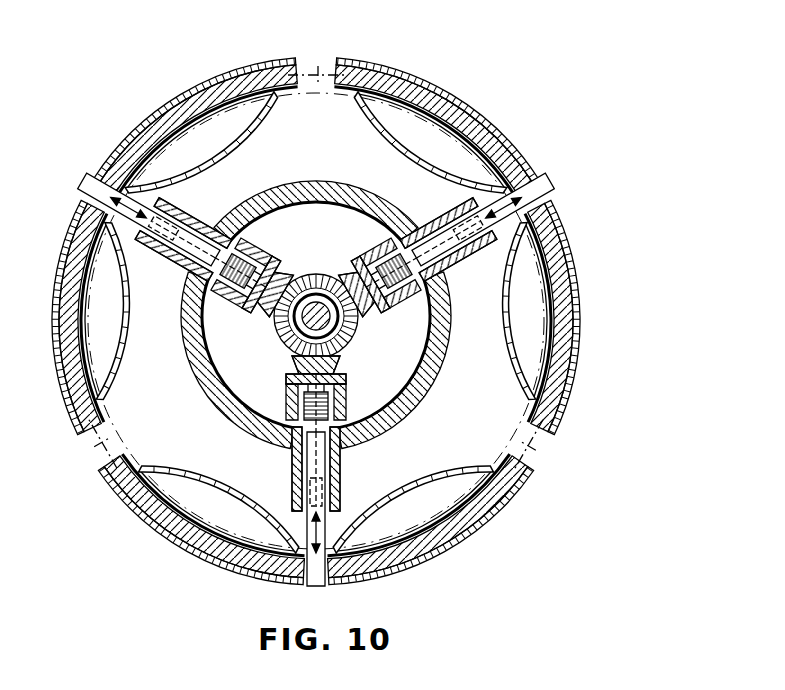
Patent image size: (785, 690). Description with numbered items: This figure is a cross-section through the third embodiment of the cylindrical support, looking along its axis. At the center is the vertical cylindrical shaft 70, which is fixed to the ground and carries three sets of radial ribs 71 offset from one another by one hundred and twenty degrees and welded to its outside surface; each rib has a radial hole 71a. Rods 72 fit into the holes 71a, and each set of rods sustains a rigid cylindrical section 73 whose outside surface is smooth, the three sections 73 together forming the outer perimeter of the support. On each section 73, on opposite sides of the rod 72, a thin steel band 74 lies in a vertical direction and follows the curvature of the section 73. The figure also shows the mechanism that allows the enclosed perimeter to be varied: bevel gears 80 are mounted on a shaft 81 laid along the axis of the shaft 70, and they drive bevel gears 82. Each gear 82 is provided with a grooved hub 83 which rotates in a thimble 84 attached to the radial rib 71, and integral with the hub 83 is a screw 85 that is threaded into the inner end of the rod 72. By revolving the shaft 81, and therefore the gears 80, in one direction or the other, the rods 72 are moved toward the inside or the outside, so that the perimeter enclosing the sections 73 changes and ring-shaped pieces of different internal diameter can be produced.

The vertical cylindrical shaft 70 is at (333, 178).
The radial ribs 71 is at (186, 208).
The holes 71a is at (143, 243).
The rods 72 is at (118, 157).
The rigid cylindrical section 73 is at (270, 62).
The thin steel band 74 is at (478, 108).
The bevel gears 80 is at (292, 345).
The shaft 81 is at (351, 338).
The bevel gears 82 is at (343, 273).
The grooved hub 83 is at (340, 270).
The thimble 84 is at (275, 255).
The screw 85 is at (226, 293).